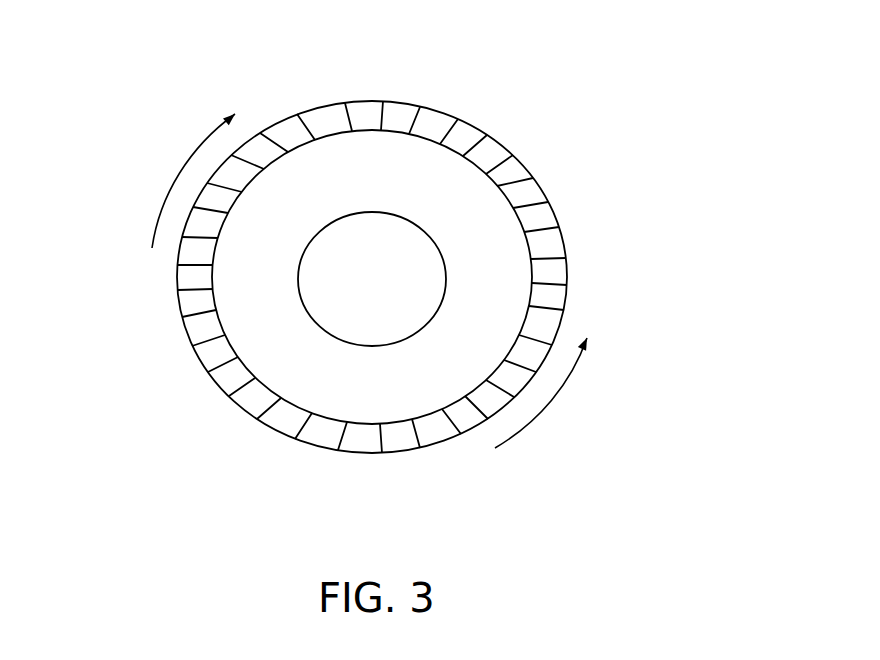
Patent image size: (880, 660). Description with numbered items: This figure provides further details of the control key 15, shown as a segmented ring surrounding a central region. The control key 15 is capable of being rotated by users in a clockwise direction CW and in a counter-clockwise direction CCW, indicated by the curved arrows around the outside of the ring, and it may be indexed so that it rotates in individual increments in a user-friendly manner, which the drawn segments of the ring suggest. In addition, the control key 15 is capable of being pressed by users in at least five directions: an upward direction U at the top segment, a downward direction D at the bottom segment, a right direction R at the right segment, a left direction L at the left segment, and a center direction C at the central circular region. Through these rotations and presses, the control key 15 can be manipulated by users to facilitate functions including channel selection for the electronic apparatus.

The control key 15 is at (516, 55).
The upward direction U is at (367, 114).
The downward direction D is at (367, 442).
The left direction L is at (193, 280).
The right direction R is at (554, 273).
The center direction C is at (378, 266).
The clockwise direction CW is at (184, 181).
The counter-clockwise direction CCW is at (563, 393).